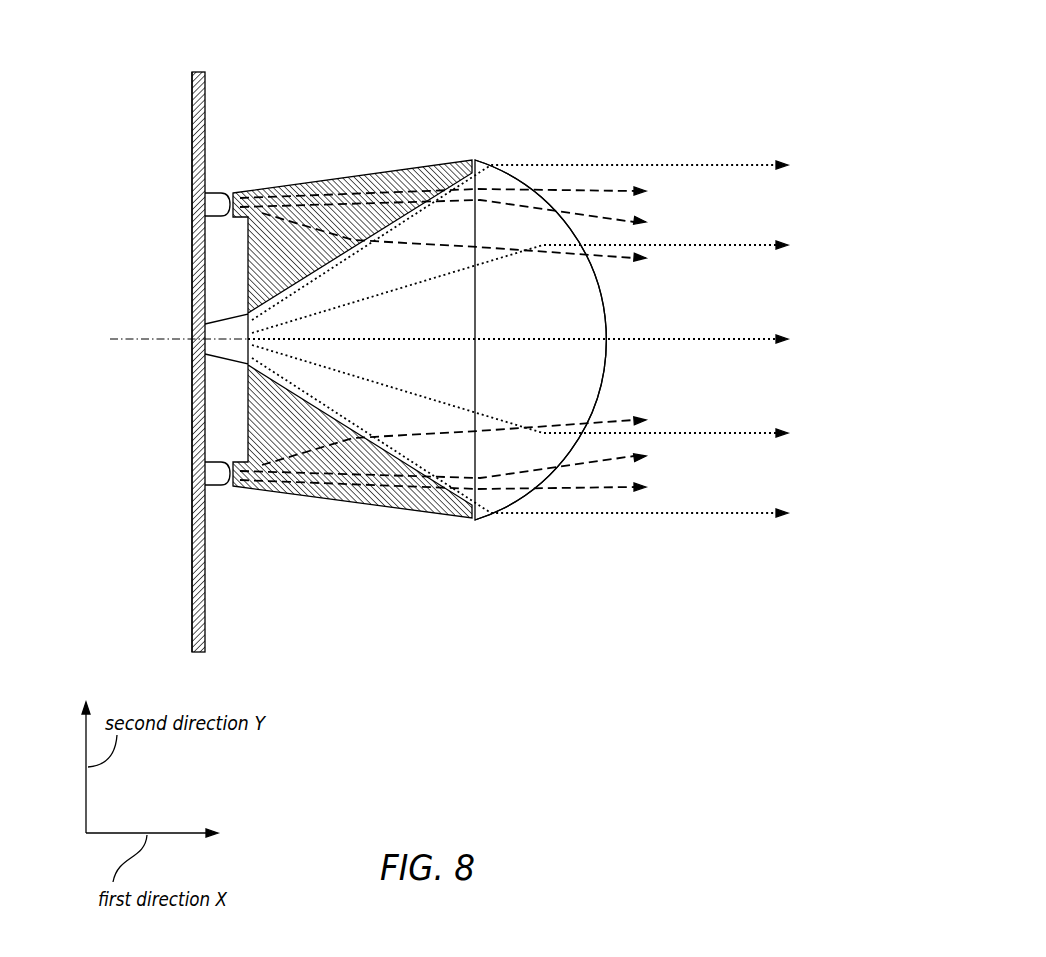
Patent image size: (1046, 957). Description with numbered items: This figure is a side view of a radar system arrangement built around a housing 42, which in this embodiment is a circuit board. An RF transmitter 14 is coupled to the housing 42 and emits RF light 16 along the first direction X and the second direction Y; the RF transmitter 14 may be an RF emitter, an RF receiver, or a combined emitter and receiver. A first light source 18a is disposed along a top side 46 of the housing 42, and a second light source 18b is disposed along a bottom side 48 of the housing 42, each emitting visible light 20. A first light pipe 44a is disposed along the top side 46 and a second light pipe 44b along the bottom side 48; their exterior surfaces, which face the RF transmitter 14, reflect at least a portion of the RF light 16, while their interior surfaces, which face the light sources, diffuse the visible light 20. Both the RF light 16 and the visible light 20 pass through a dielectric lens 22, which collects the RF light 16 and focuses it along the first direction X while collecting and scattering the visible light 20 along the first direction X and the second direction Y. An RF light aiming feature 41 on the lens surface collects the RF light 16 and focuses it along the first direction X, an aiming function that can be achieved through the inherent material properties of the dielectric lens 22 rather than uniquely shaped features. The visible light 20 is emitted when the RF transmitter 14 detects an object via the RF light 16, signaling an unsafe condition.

The RF transmitter 14 is at (224, 322).
The housing 42 is at (205, 110).
The first light source 18a is at (218, 205).
The second light source 18b is at (215, 480).
The first light pipe 44a is at (431, 175).
The second light pipe 44b is at (417, 500).
The visible light 20 is at (465, 342).
The dielectric lens 22 is at (570, 303).
The RF light aiming feature 41 is at (681, 340).
The RF light 16 is at (518, 339).
The top side 46 is at (133, 205).
The bottom side 48 is at (118, 495).